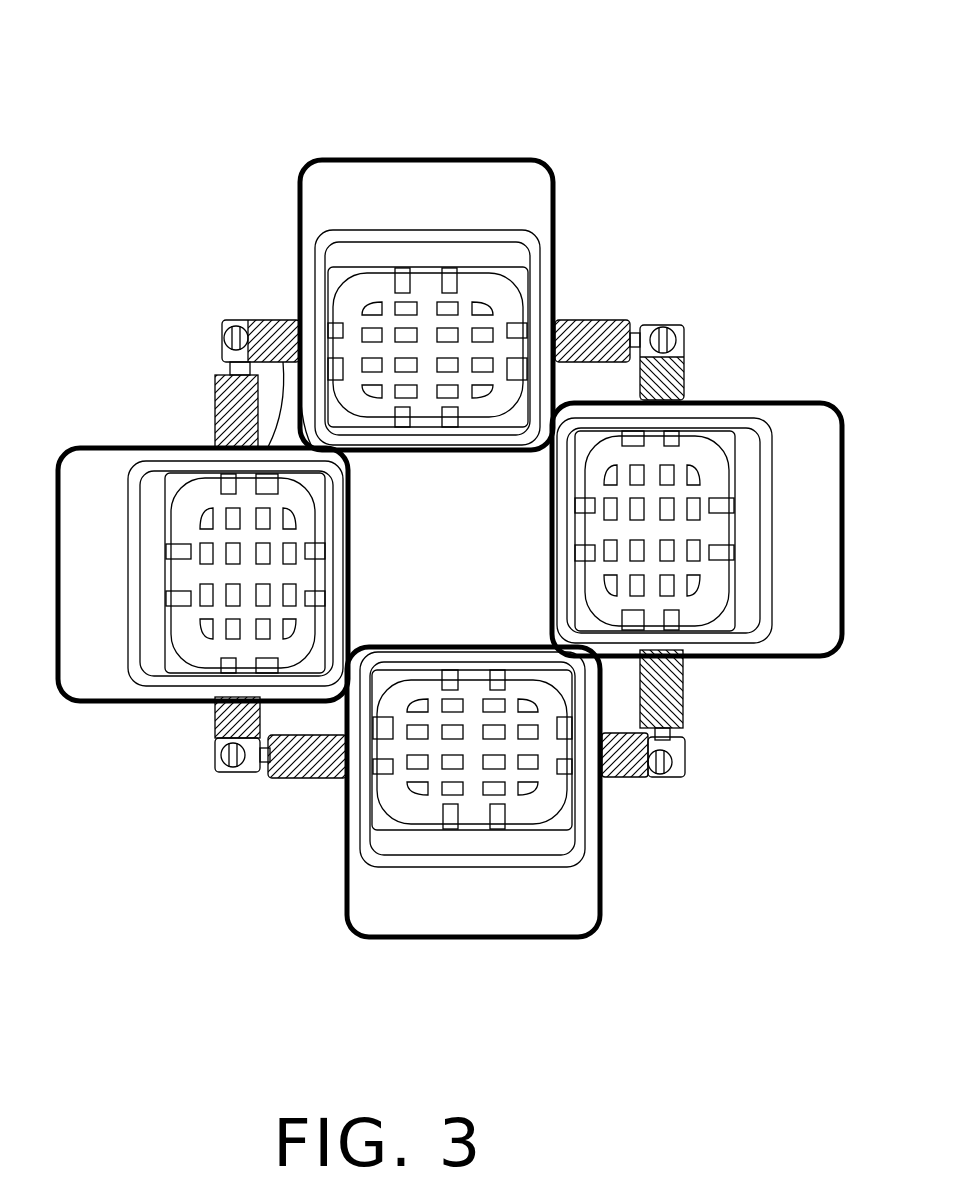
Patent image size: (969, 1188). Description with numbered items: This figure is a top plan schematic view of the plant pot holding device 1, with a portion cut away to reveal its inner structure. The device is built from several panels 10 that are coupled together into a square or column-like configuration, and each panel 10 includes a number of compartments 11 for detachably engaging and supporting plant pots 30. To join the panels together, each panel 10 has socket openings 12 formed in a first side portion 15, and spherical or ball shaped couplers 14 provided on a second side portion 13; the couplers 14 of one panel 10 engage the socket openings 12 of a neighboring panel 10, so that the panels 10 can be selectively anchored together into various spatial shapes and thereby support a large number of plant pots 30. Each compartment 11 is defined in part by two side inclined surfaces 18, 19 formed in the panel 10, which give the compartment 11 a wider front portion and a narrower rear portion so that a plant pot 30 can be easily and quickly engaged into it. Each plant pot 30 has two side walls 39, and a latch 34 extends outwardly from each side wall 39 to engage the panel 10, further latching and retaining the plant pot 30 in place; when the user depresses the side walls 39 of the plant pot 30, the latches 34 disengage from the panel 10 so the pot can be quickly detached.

The plant pot holding device 1 is at (170, 147).
The panel 10 is at (303, 778).
The compartment 11 is at (683, 652).
The socket opening 12 is at (222, 750).
The second side portion 13 is at (224, 778).
The coupler 14 is at (237, 332).
The first side portion 15 is at (215, 390).
The side inclined surface 18 is at (218, 447).
The side inclined surface 19 is at (227, 697).
The plant pot 30 is at (731, 400).
The latch 34 is at (262, 447).
The side wall 39 is at (82, 450).